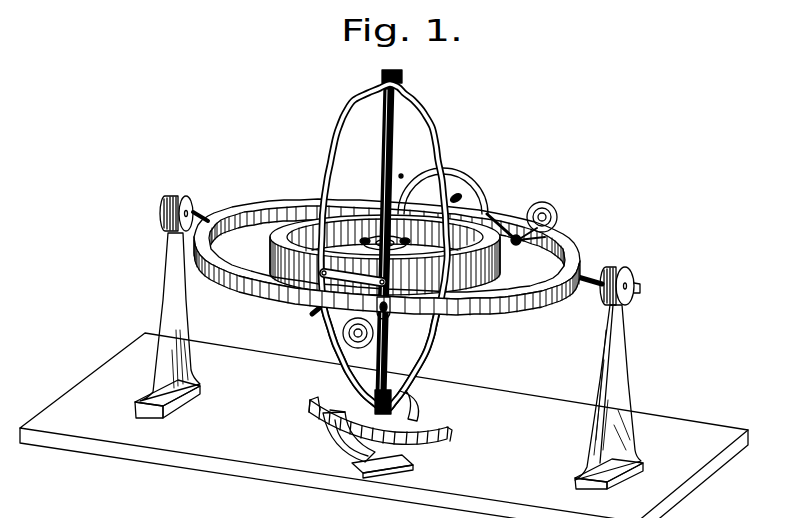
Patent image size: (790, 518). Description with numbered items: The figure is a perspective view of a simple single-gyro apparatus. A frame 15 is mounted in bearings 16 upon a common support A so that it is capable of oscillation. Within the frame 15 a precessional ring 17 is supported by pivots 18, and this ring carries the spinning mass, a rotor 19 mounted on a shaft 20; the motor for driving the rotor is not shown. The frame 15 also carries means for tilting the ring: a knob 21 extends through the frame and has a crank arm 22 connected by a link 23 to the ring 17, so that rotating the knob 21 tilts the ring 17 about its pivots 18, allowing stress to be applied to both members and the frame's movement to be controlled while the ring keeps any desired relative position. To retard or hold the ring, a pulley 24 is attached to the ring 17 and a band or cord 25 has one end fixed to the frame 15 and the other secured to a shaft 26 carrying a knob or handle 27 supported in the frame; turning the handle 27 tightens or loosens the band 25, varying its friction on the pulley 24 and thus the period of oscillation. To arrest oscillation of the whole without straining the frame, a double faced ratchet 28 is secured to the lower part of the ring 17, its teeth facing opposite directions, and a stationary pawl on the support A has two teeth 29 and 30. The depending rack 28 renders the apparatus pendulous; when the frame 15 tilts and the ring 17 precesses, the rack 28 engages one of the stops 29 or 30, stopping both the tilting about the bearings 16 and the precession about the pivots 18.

The common support A is at (672, 426).
The frame 15 is at (512, 306).
The bearings 16 is at (161, 199).
The precessional ring 17 is at (433, 128).
The pivots 18 is at (472, 181).
The rotor 19 is at (277, 212).
The shaft 20 is at (383, 126).
The knob 21 is at (333, 357).
The crank arm 22 is at (388, 298).
The link 23 is at (350, 279).
The pulley 24 is at (488, 202).
The band or cord 25 is at (402, 175).
The shaft 26 is at (568, 240).
The knob or handle 27 is at (553, 202).
The double faced ratchet 28 is at (452, 440).
The tooth of pawl 29 is at (334, 441).
The tooth of pawl 30 is at (413, 404).